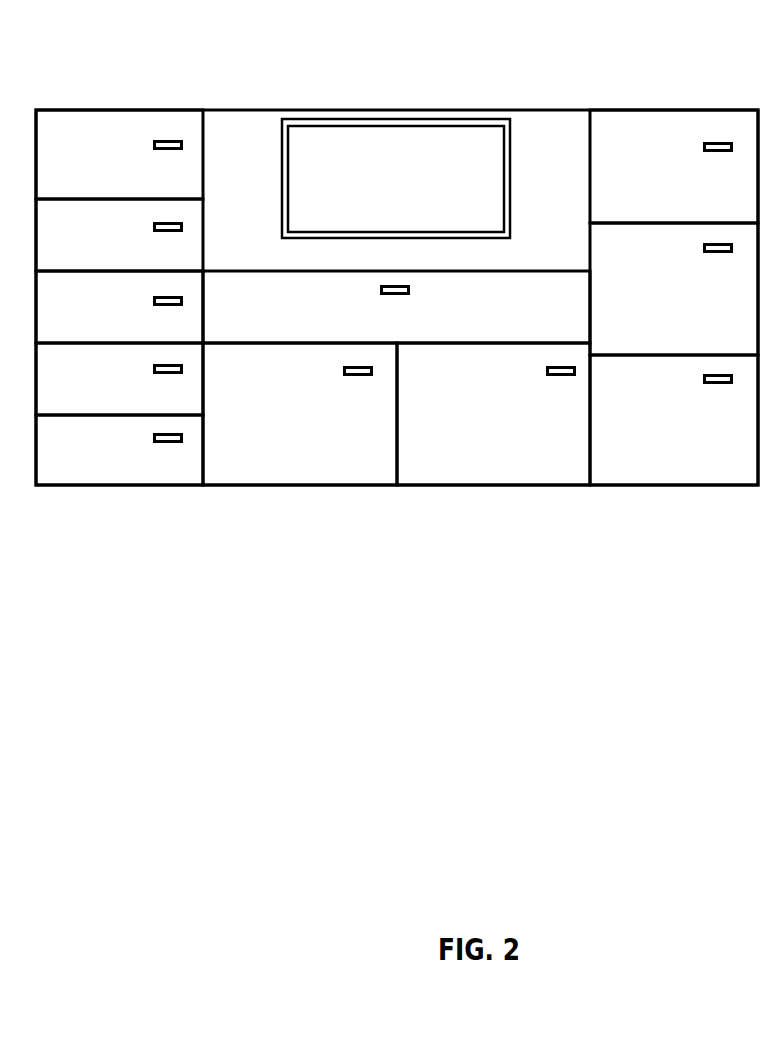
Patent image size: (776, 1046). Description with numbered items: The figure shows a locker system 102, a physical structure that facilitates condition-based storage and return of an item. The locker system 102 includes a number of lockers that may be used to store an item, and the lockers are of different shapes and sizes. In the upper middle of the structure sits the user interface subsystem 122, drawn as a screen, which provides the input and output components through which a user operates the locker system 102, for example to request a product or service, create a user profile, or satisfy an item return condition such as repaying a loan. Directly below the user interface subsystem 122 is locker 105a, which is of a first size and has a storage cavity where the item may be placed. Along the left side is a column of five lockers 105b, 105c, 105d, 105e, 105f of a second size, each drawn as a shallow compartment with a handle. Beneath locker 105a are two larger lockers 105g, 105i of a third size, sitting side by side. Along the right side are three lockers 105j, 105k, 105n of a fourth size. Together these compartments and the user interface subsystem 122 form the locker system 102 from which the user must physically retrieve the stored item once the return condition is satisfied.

The locker system 102 is at (524, 532).
The user interface subsystem 122 is at (396, 145).
The locker 105a is at (418, 326).
The locker 105b is at (127, 168).
The locker 105c is at (127, 250).
The locker 105d is at (127, 318).
The locker 105e is at (127, 388).
The locker 105f is at (126, 462).
The locker 105g is at (318, 432).
The locker 105i is at (495, 432).
The locker 105j is at (693, 186).
The locker 105k is at (702, 308).
The locker 105n is at (692, 452).